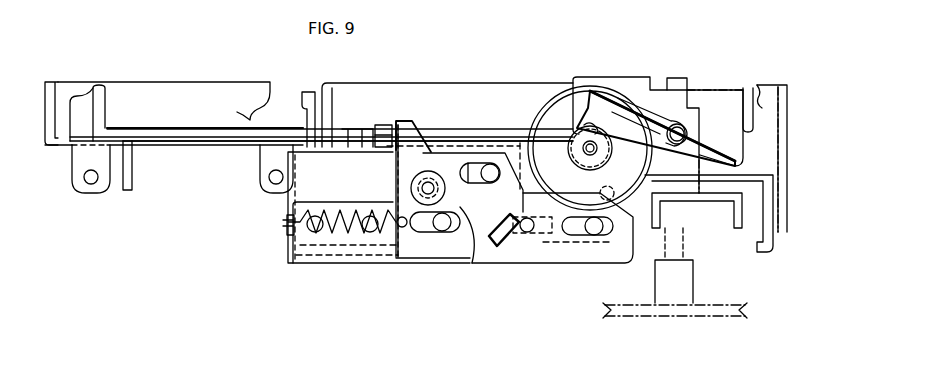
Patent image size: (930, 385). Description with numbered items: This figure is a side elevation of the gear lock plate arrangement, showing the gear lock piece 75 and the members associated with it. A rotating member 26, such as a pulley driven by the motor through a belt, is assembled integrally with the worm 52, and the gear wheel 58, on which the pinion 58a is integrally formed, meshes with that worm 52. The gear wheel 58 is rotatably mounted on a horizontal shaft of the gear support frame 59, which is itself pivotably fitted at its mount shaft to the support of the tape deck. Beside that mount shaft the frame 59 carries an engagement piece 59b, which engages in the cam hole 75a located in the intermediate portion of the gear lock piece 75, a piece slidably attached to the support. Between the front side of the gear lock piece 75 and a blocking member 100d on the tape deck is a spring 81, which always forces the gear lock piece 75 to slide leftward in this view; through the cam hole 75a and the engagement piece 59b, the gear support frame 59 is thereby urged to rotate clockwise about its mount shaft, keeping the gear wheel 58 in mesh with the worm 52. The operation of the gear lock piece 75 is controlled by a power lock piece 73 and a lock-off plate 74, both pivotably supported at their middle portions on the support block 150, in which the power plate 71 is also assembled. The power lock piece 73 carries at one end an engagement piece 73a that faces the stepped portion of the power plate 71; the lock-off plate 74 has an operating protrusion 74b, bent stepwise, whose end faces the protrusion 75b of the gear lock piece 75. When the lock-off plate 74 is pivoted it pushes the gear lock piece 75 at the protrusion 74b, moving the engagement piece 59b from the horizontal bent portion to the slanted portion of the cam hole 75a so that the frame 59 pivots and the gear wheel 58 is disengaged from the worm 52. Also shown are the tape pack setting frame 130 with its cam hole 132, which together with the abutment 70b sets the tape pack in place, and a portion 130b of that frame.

The power plate 71 is at (105, 102).
The support block 150 is at (197, 143).
The power lock piece 73 is at (357, 142).
The engagement piece 73a is at (335, 125).
The lock-off plate 74 is at (440, 158).
The operating protrusion 74b is at (382, 125).
The protrusion 75b is at (430, 112).
The gear wheel 58 is at (618, 90).
The pinion 58a is at (575, 130).
The cam hole 132 is at (634, 102).
The abutment 70b is at (681, 126).
The worm 52 is at (727, 107).
The bent portion of bracket 130b is at (745, 88).
The tape pack setting frame 130 is at (753, 110).
The gear support frame 59 is at (609, 185).
The engagement piece 59b is at (530, 234).
The blocking member 100d is at (289, 224).
The spring 81 is at (346, 226).
The gear lock piece 75 is at (558, 265).
The cam hole 75a is at (505, 247).
The rotating member 26 is at (738, 305).